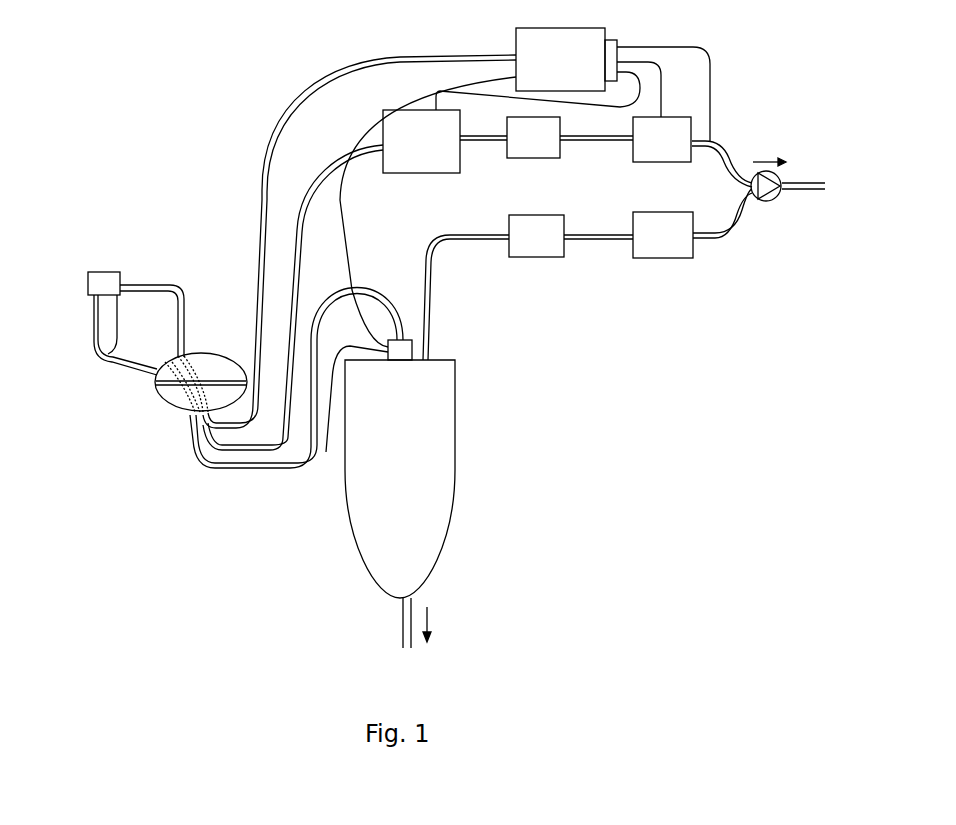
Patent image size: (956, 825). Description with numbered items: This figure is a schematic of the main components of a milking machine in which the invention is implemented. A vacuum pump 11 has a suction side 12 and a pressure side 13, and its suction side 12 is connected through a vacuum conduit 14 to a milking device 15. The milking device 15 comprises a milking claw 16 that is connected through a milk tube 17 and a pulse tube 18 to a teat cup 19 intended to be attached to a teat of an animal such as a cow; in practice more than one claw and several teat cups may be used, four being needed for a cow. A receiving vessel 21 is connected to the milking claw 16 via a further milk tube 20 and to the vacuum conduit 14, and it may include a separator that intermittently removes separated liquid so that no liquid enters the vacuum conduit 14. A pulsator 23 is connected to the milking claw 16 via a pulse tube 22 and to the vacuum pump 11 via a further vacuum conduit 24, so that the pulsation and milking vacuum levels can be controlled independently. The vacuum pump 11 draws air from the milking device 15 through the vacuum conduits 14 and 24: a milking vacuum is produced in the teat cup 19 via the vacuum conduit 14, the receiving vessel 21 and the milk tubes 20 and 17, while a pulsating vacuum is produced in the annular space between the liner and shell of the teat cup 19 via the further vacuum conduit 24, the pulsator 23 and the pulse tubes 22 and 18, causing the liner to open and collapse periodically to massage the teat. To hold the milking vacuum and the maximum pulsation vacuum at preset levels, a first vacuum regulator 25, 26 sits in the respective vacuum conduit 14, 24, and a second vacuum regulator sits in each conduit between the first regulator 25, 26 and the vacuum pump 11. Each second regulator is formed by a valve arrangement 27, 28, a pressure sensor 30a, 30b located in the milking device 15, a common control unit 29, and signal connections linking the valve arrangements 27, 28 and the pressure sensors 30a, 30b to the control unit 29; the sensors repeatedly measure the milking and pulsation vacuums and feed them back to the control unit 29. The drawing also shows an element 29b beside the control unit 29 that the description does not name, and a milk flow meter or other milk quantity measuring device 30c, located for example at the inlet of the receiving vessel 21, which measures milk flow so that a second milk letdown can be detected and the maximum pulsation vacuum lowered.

The vacuum pump 11 is at (772, 201).
The suction side 12 is at (743, 195).
The pressure side 13 is at (795, 191).
The vacuum conduit 14 is at (578, 241).
The milking device 15 is at (138, 526).
The milking claw 16 is at (168, 404).
The milk tube 17 is at (150, 372).
The pulse tube 18 is at (183, 295).
The teat cup 19 is at (96, 318).
The further milk tube 20 is at (270, 470).
The receiving vessel 21 is at (455, 455).
The pulse tube 22 is at (313, 185).
The pulsator 23 is at (420, 173).
The further vacuum conduit 24 is at (598, 141).
The first vacuum regulator 25 is at (531, 258).
The first vacuum regulator 26 is at (525, 158).
The valve arrangement 27 is at (666, 258).
The valve arrangement 28 is at (660, 162).
The control unit 29 is at (513, 43).
The connector 29b is at (611, 39).
The pressure sensor 30a is at (172, 418).
The pressure sensor 30b is at (218, 405).
The milk quantity measuring device 30c is at (358, 410).